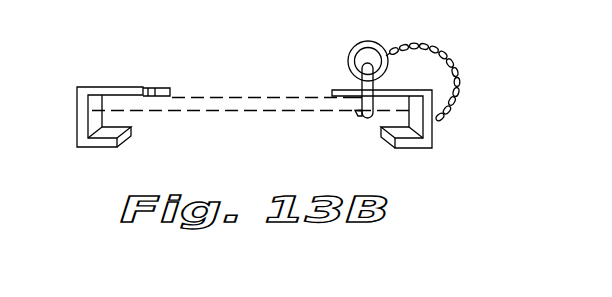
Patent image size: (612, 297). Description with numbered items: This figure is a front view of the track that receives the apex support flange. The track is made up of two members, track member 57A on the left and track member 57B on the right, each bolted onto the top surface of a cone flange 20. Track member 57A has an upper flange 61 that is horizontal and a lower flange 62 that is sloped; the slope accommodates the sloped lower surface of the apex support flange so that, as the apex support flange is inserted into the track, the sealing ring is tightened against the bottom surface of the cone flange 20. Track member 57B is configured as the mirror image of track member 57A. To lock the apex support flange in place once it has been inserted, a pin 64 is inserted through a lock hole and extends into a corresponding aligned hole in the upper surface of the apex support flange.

The cone flange 20 is at (237, 90).
The track member 57A is at (77, 107).
The track member 57B is at (437, 143).
The upper flange 61 is at (135, 92).
The lower flange 62 is at (125, 140).
The pin 64 is at (363, 118).